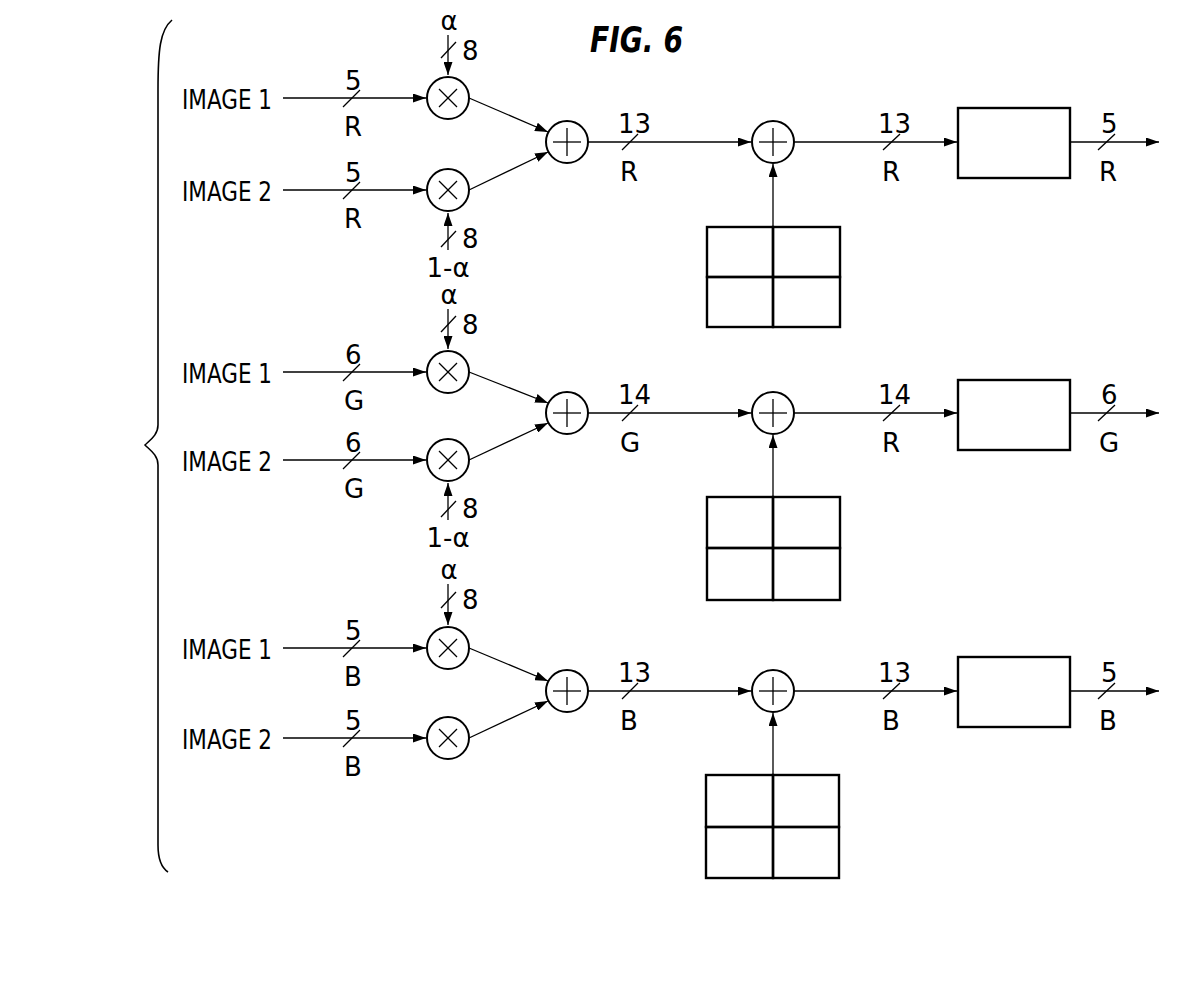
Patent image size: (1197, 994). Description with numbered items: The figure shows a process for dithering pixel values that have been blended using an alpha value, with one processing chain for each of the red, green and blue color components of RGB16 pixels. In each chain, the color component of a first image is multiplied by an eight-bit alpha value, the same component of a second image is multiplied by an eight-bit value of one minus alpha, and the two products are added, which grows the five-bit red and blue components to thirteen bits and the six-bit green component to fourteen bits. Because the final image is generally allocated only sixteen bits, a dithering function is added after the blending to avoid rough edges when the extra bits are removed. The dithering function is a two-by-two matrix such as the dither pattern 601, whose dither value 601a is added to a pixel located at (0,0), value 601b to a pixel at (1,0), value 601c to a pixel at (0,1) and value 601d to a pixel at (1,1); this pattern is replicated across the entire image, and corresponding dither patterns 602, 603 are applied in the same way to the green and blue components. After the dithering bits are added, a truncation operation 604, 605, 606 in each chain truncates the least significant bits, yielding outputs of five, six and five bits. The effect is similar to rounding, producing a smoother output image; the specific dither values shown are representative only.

The dither pattern 601 is at (782, 263).
The dither value 601a is at (712, 242).
The dither value 601b is at (712, 308).
The dither value 601c is at (830, 243).
The dither value 601d is at (826, 288).
The dither pattern 602 is at (850, 532).
The dither pattern 603 is at (850, 810).
The truncation operation 604 is at (1039, 108).
The truncation operation 605 is at (1039, 380).
The truncation operation 606 is at (1039, 657).